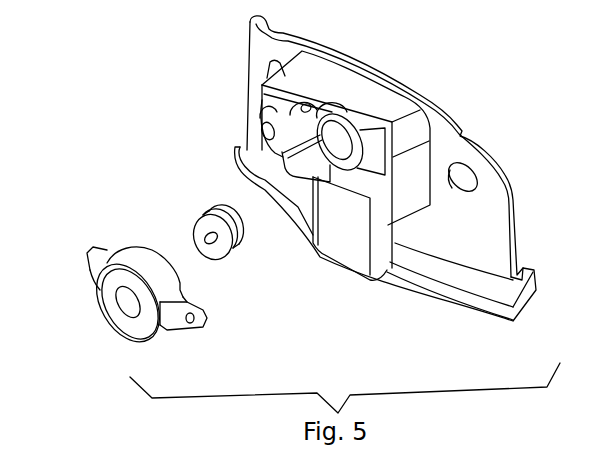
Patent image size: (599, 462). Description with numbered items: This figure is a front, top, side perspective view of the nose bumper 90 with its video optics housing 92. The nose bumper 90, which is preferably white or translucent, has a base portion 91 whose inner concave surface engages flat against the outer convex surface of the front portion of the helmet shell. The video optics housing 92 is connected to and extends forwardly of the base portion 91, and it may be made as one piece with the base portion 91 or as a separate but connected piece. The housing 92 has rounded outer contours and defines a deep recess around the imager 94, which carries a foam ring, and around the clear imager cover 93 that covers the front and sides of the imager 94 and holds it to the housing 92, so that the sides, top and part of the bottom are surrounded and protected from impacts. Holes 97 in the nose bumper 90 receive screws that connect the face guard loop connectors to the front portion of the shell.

The nose bumper 90 is at (240, 110).
The base portion 91 is at (454, 132).
The video optics housing 92 is at (380, 103).
The imager cover 93 is at (115, 257).
The imager 94 is at (203, 217).
The holes 97 is at (462, 177).